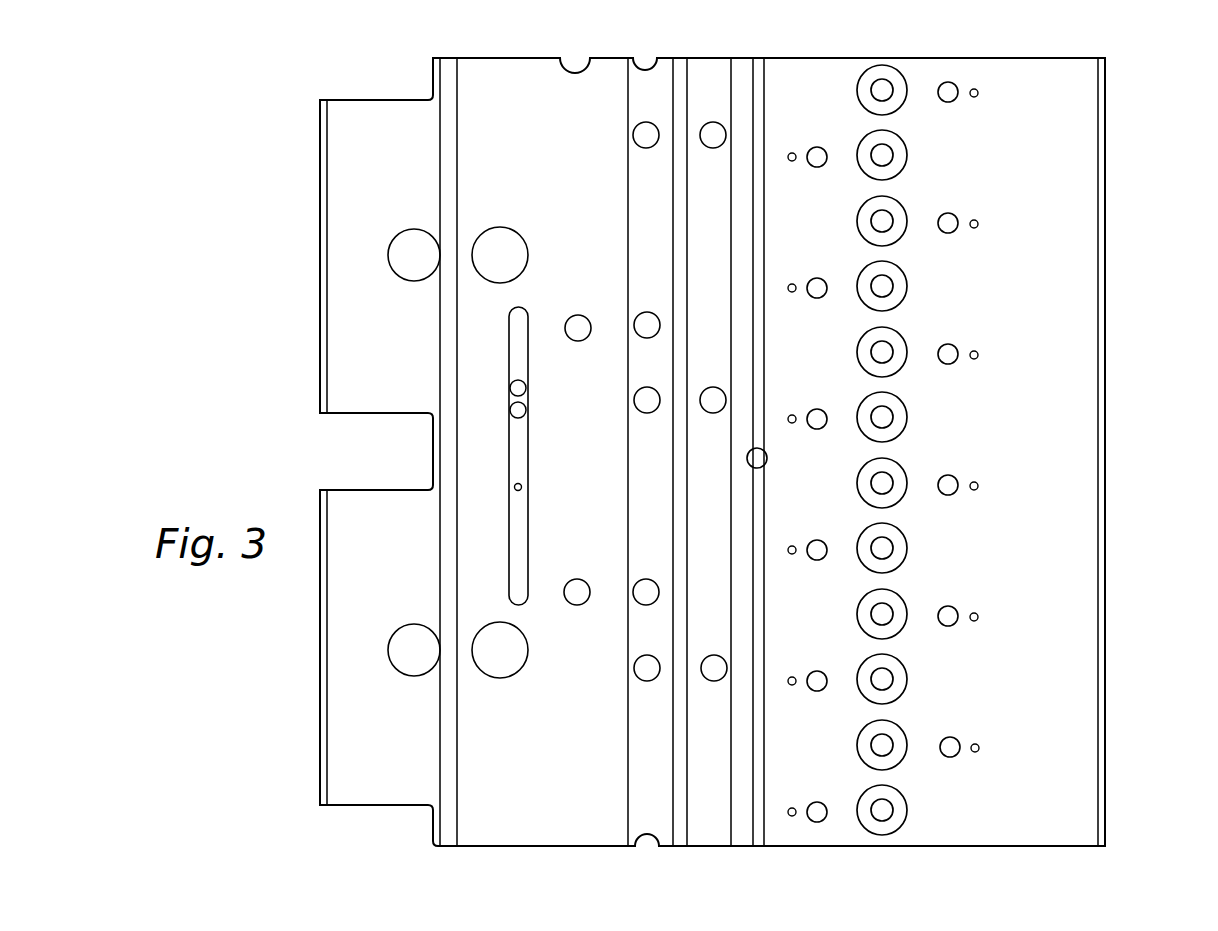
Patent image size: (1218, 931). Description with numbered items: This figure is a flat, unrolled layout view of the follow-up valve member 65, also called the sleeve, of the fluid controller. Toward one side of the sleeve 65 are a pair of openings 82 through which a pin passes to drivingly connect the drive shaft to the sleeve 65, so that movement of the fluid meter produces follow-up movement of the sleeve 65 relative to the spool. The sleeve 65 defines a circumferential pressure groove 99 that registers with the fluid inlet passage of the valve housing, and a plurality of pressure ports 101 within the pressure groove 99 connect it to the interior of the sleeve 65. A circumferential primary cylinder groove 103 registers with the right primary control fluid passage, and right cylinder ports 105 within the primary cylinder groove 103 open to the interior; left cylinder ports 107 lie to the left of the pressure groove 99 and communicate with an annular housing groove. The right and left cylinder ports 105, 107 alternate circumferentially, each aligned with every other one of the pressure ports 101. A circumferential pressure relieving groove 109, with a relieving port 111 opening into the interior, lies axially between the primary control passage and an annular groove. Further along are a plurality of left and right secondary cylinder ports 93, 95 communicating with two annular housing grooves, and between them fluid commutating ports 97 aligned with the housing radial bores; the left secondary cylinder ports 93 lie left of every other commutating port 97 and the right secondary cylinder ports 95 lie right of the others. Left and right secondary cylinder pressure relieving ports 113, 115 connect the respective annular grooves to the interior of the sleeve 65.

The follow-up valve member 65 is at (1145, 175).
The openings 82 is at (510, 233).
The left secondary cylinder ports 93 is at (814, 168).
The right secondary cylinder ports 95 is at (955, 102).
The fluid commutating ports 97 is at (907, 90).
The circumferential pressure groove 99 is at (665, 545).
The pressure ports 101 is at (643, 72).
The circumferential primary cylinder groove 103 is at (728, 545).
The right cylinder ports 105 is at (704, 145).
The left cylinder ports 107 is at (565, 73).
The circumferential pressure relieving groove 109 is at (764, 134).
The relieving port 111 is at (747, 458).
The left secondary cylinder pressure relieving ports 113 is at (793, 150).
The right secondary cylinder pressure relieving ports 115 is at (978, 91).